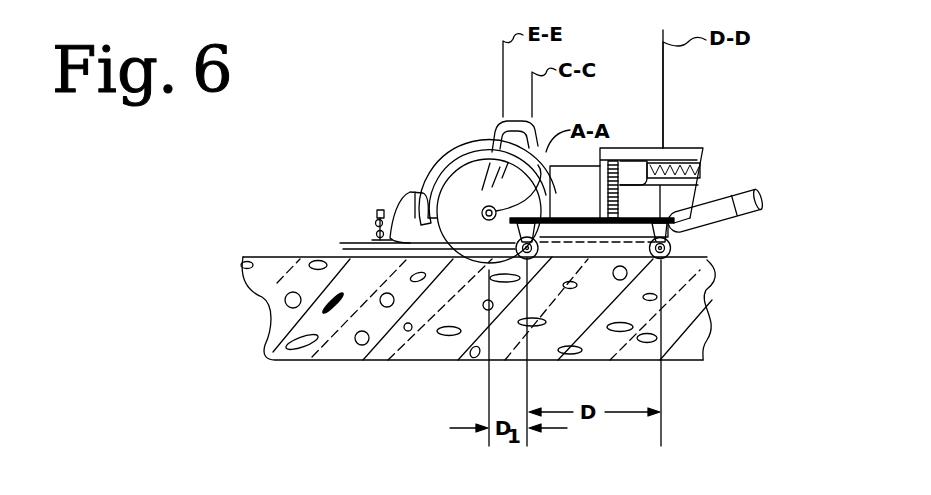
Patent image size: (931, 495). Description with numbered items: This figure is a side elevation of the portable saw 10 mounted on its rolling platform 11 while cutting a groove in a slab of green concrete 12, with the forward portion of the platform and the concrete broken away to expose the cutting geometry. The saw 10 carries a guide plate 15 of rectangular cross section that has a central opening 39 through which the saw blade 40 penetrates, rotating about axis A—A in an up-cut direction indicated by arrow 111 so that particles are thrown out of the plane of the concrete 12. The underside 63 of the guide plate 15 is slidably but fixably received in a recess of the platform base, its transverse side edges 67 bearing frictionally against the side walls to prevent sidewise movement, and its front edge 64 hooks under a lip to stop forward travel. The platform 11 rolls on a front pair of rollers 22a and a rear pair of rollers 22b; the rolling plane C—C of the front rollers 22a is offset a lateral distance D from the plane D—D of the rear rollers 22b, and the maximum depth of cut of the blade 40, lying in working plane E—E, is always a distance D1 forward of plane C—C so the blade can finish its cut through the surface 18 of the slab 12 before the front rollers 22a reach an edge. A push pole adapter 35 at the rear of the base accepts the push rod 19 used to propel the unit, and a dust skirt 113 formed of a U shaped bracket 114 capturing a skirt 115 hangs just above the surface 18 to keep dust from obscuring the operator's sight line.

The saw 10 is at (716, 190).
The platform 11 is at (683, 238).
The concrete 12 is at (265, 283).
The guide plate 15 is at (352, 242).
The surface 18 is at (266, 258).
The push rod 19 is at (755, 213).
The front pair of rollers 22a is at (530, 218).
The rear pair of rollers 22b is at (675, 253).
The push pole adapter 35 is at (678, 211).
The central opening 39 is at (411, 190).
The saw blade 40 is at (480, 174).
The underside 63 is at (343, 249).
The front edge 64 is at (372, 240).
The transverse side edges 67 is at (455, 242).
The arrow 111 is at (395, 147).
The dust skirt 113 is at (623, 250).
The U shaped bracket 114 is at (593, 250).
The skirt 115 is at (563, 250).